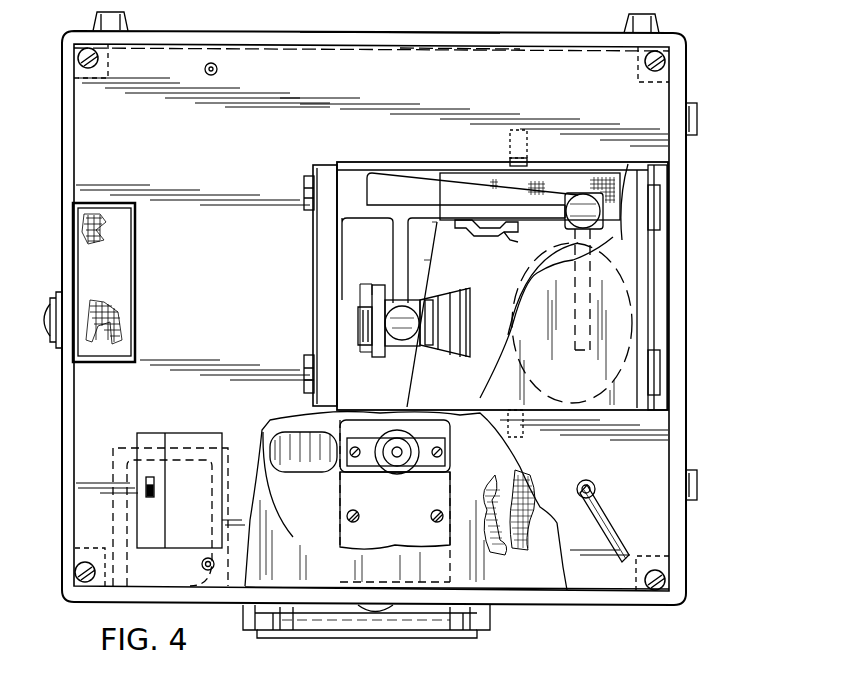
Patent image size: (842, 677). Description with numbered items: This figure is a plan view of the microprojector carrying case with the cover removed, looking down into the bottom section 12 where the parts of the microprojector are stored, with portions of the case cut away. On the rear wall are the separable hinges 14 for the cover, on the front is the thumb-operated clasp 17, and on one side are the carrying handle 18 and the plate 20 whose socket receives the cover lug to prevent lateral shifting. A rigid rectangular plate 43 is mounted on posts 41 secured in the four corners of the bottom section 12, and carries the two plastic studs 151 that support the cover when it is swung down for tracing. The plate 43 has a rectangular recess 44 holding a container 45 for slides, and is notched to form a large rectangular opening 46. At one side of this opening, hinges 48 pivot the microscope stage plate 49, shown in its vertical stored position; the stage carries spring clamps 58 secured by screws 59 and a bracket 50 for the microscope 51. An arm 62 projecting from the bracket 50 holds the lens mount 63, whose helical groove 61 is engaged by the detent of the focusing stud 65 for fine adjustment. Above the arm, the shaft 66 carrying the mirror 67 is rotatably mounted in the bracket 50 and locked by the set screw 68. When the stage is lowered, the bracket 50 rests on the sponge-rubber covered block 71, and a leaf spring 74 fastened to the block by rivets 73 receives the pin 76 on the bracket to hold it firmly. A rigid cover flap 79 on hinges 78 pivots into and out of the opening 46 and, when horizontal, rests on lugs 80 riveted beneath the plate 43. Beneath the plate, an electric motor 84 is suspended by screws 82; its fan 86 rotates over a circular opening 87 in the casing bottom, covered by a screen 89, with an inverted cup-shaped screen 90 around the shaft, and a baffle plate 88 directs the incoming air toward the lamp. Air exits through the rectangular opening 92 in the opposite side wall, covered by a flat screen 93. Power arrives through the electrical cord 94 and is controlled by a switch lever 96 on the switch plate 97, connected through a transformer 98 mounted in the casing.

The bottom section 12 is at (563, 36).
The hinges 14 is at (697, 120).
The clasp 17 is at (52, 310).
The handle 18 is at (382, 635).
The plate 20 is at (375, 612).
The posts 41 is at (108, 62).
The plate 43 is at (372, 89).
The recess 44 is at (135, 297).
The container 45 is at (118, 270).
The opening 46 is at (422, 172).
The hinges 48 is at (305, 198).
The stage plate 49 is at (313, 294).
The bracket 50 is at (380, 176).
The microscope 51 is at (468, 286).
The spring clamps 58 is at (352, 300).
The screws 59 is at (342, 272).
The helical groove 61 is at (362, 346).
The arm 62 is at (426, 262).
The lens mount 63 is at (432, 306).
The focusing stud 65 is at (400, 346).
The shaft 66 is at (595, 242).
The mirror 67 is at (524, 280).
The set screw 68 is at (570, 224).
The block 71 is at (564, 180).
The rivets 73 is at (468, 226).
The leaf spring 74 is at (510, 238).
The pin 76 is at (508, 218).
The hinges 78 is at (660, 208).
The cover flap 79 is at (598, 376).
The lugs 80 is at (510, 148).
The screws 82 is at (358, 517).
The electric motor 84 is at (444, 490).
The fan 86 is at (312, 470).
The opening 87 is at (286, 528).
The baffle plate 88 is at (322, 573).
The screen 89 is at (490, 494).
The screen 90 is at (494, 520).
The opening 92 is at (406, 32).
The screen 93 is at (447, 52).
The electrical cord 94 is at (612, 512).
The lever 96 is at (154, 490).
The switch plate 97 is at (203, 435).
The transformer 98 is at (120, 470).
The studs 151 is at (218, 69).